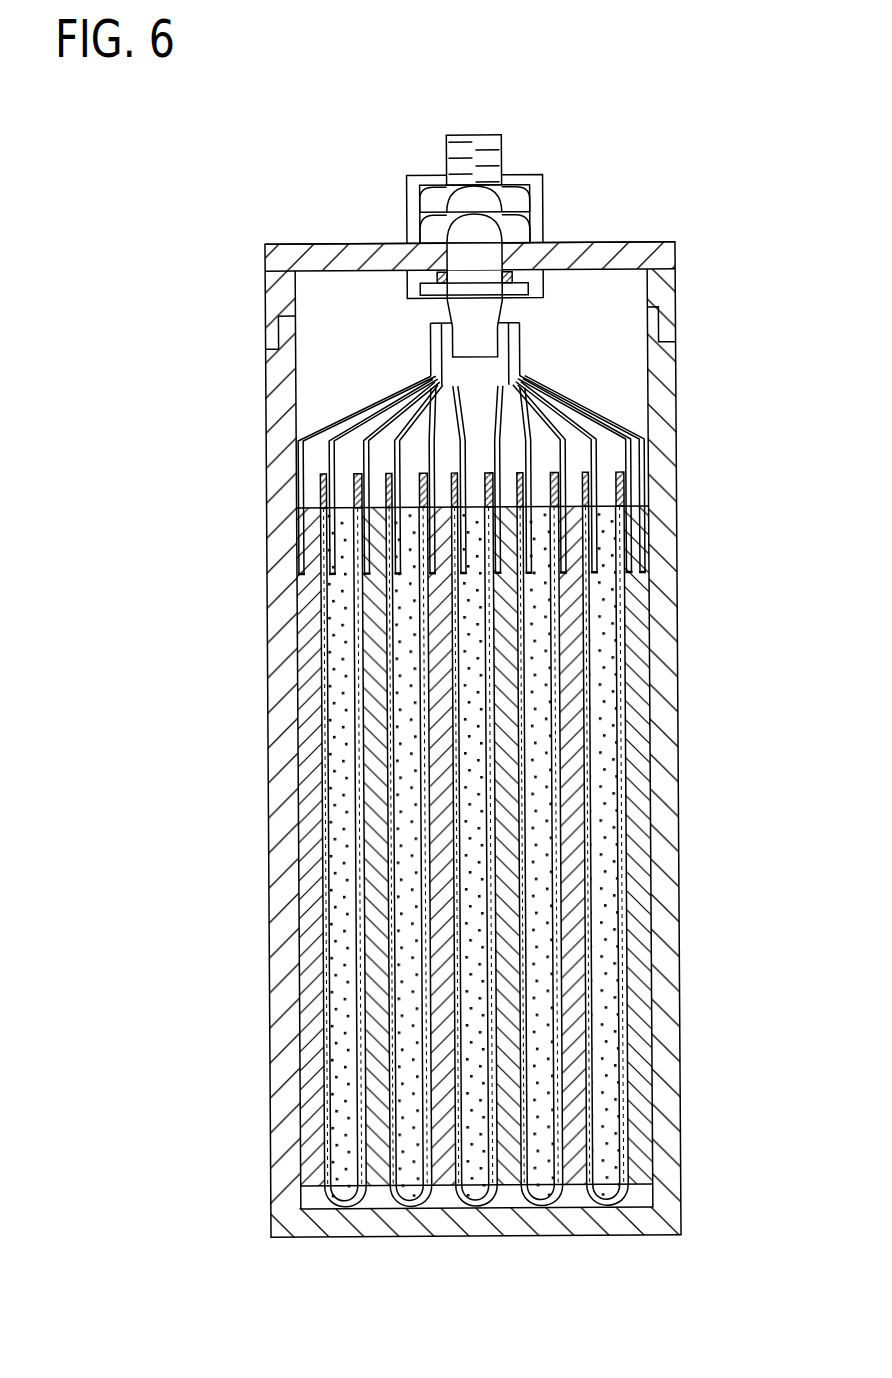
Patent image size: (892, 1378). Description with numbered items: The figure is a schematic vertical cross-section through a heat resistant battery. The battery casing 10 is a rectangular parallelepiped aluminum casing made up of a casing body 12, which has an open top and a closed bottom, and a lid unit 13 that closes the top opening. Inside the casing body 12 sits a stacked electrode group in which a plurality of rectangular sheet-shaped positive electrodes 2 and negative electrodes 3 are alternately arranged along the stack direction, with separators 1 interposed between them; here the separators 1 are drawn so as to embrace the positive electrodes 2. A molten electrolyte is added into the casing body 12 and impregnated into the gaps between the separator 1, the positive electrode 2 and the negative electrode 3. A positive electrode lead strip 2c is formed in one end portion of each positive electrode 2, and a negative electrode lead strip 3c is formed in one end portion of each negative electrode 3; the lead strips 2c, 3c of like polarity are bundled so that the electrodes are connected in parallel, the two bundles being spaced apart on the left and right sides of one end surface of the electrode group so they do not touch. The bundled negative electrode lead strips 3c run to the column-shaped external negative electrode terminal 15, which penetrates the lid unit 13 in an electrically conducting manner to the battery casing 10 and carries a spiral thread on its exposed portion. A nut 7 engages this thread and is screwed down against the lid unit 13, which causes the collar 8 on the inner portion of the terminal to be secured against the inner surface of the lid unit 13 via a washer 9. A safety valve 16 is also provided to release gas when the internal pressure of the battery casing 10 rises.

The separator 1 is at (637, 480).
The positive electrode 2 is at (615, 748).
The positive electrode lead strip 2c is at (487, 474).
The negative electrode 3 is at (637, 636).
The negative electrode lead strip 3c is at (465, 474).
The nut 7 is at (431, 196).
The collar 8 is at (513, 292).
The washer 9 is at (513, 279).
The battery casing 10 is at (445, 663).
The casing body 12 is at (272, 388).
The lid unit 13 is at (333, 258).
The external negative electrode terminal 15 is at (495, 160).
The safety valve 16 is at (537, 193).